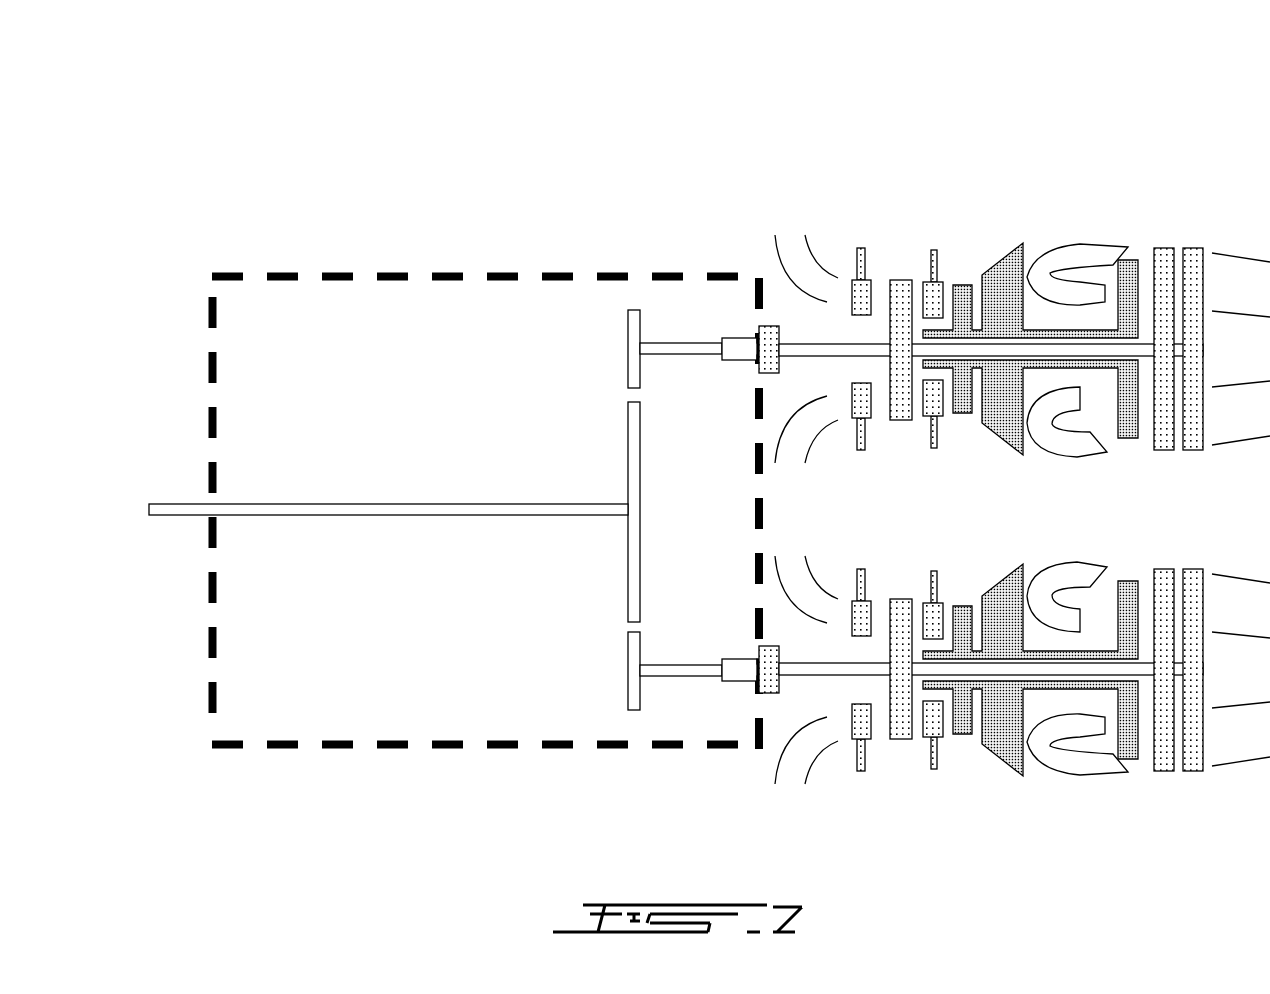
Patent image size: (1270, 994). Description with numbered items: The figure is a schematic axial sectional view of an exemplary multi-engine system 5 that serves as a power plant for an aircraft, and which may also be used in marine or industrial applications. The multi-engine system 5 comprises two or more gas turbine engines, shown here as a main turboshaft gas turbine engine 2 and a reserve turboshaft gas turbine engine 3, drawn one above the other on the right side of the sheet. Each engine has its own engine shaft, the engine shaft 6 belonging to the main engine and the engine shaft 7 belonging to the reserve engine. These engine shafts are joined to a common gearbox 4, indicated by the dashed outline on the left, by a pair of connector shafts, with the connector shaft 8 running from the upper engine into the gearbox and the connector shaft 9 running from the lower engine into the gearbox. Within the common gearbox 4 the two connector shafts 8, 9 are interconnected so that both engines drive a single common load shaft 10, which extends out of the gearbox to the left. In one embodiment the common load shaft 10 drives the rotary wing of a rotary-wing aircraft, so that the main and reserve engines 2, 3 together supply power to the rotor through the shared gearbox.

The main turboshaft gas turbine engine 2 is at (1090, 244).
The reserve turboshaft gas turbine engine 3 is at (1080, 777).
The common gearbox 4 is at (448, 272).
The multi-engine system 5 is at (752, 115).
The engine shaft 6 is at (808, 343).
The engine shaft 7 is at (817, 672).
The connector shaft 8 is at (680, 343).
The connector shaft 9 is at (678, 670).
The common load shaft 10 is at (177, 504).